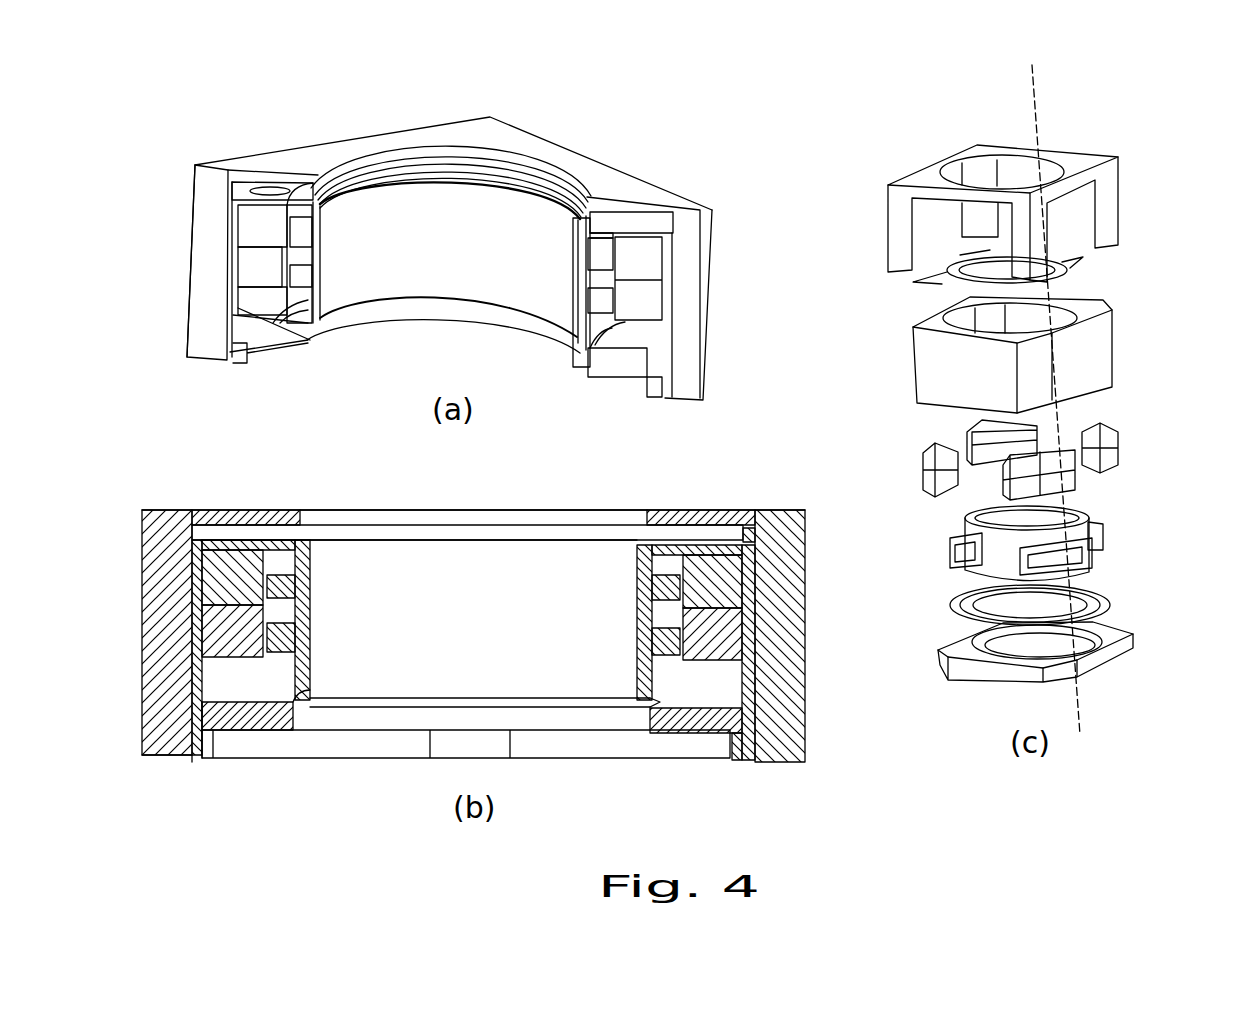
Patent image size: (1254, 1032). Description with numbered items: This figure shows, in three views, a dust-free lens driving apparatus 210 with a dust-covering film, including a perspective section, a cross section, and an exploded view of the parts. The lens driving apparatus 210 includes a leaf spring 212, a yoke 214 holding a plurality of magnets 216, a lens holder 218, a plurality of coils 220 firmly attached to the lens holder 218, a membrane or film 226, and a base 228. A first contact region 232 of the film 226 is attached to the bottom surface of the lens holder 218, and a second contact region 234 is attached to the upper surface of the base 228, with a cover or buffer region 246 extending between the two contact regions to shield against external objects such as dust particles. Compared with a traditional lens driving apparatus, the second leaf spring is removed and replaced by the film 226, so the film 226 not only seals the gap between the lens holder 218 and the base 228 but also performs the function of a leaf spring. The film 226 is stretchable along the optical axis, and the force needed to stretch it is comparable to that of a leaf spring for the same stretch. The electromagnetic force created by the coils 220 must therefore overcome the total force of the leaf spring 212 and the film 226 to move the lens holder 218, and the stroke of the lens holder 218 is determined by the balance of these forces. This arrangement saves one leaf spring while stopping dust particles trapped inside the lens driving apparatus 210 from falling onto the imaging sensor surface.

The lens driving apparatus 210 is at (617, 145).
The leaf spring 212 is at (220, 542).
The yoke 214 is at (578, 262).
The magnets 216 is at (640, 303).
The lens holder 218 is at (640, 640).
The coils 220 is at (615, 250).
The film 226 is at (604, 352).
The base 228 is at (582, 365).
The first contact region 232 is at (300, 700).
The second contact region 234 is at (256, 703).
The buffer region 246 is at (300, 700).